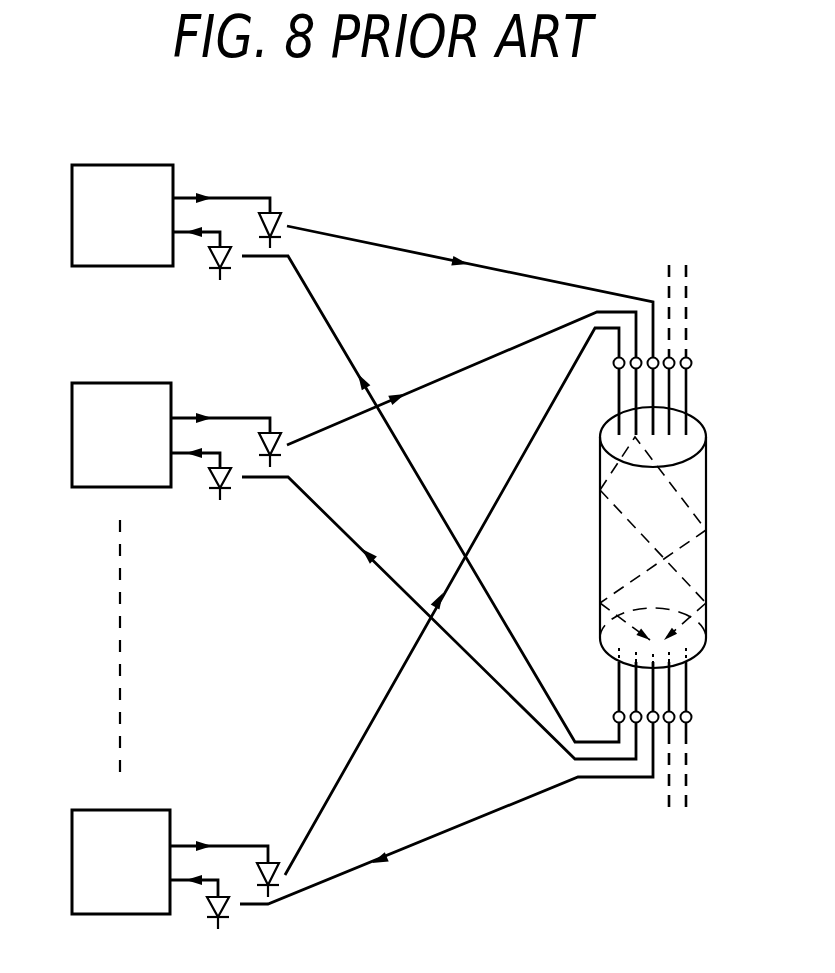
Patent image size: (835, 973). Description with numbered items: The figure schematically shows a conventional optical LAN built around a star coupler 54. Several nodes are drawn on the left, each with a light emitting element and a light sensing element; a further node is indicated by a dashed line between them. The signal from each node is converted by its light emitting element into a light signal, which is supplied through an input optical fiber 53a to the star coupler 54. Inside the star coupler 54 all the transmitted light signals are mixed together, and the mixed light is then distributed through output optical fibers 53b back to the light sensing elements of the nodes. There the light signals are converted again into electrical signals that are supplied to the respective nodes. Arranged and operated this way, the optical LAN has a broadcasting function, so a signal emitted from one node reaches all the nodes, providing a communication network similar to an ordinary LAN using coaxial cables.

The input optical fiber 53a is at (562, 382).
The output optical fiber 53b is at (553, 708).
The star coupler 54 is at (707, 493).